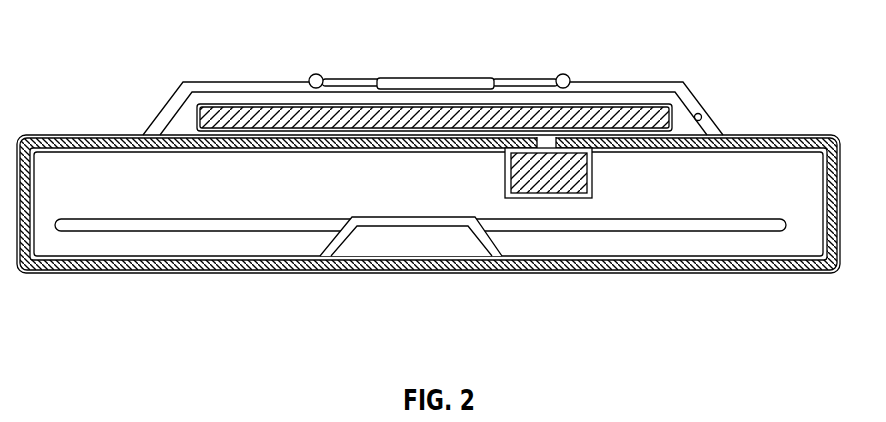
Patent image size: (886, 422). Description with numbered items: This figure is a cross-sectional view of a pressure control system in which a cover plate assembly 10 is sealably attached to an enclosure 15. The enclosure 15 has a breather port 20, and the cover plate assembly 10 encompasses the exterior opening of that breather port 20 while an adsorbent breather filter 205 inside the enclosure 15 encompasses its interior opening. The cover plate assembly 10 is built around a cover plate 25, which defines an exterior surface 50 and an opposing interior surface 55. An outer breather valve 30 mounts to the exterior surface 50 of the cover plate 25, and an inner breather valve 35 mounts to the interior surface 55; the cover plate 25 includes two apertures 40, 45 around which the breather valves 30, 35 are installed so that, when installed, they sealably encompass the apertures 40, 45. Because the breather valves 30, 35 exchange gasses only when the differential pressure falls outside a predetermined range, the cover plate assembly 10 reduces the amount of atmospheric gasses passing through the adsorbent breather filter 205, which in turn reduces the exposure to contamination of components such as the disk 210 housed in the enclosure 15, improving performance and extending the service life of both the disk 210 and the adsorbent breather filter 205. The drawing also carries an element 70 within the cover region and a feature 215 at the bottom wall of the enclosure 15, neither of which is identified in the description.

The cover plate assembly 10 is at (96, 63).
The enclosure 15 is at (800, 133).
The breather port 20 is at (558, 143).
The cover plate 25 is at (194, 80).
The outer breather valve 30 is at (552, 76).
The inner breather valve 35 is at (335, 79).
The aperture 40 is at (517, 72).
The aperture 45 is at (358, 70).
The exterior surface 50 is at (646, 80).
The interior surface 55 is at (701, 116).
The circuit board 70 is at (198, 121).
The adsorbent breather filter 205 is at (566, 181).
The disk 210 is at (531, 225).
The support rib 215 is at (345, 280).